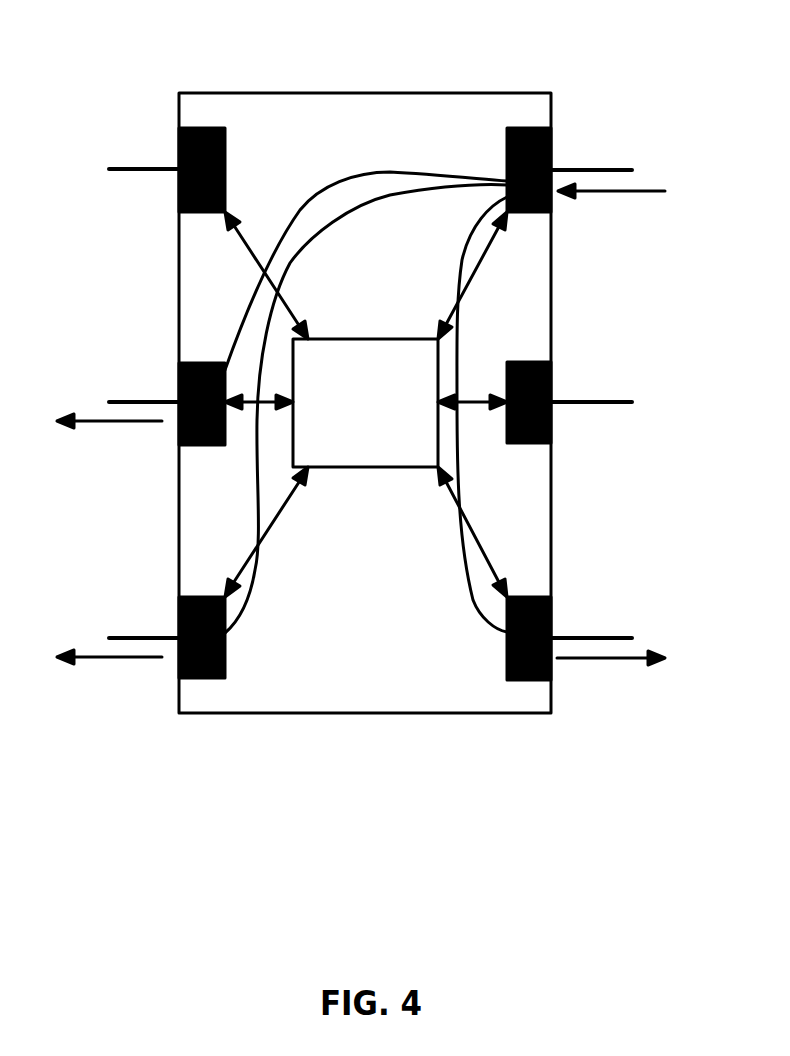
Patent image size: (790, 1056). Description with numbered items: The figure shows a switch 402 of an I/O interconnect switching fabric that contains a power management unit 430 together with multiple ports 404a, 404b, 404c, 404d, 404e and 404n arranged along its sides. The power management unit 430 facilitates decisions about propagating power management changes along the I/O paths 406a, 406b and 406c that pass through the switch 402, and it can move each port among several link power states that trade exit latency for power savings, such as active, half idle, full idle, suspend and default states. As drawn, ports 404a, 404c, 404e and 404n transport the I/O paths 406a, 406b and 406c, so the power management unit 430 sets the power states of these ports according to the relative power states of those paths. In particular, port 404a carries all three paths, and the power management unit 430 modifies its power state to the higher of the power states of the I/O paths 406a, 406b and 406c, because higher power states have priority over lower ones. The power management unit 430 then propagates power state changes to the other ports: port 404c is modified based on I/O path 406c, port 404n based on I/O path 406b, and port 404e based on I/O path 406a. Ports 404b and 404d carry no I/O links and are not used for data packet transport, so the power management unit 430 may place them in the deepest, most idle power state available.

The switch 402 is at (300, 103).
The port 404a is at (551, 147).
The port 404b is at (551, 415).
The port 404c is at (551, 618).
The port 404d is at (179, 147).
The port 404e is at (179, 372).
The port 404n is at (179, 612).
The I/O path 406a is at (358, 173).
The I/O path 406b is at (333, 220).
The I/O path 406c is at (459, 352).
The power management unit 430 is at (365, 403).